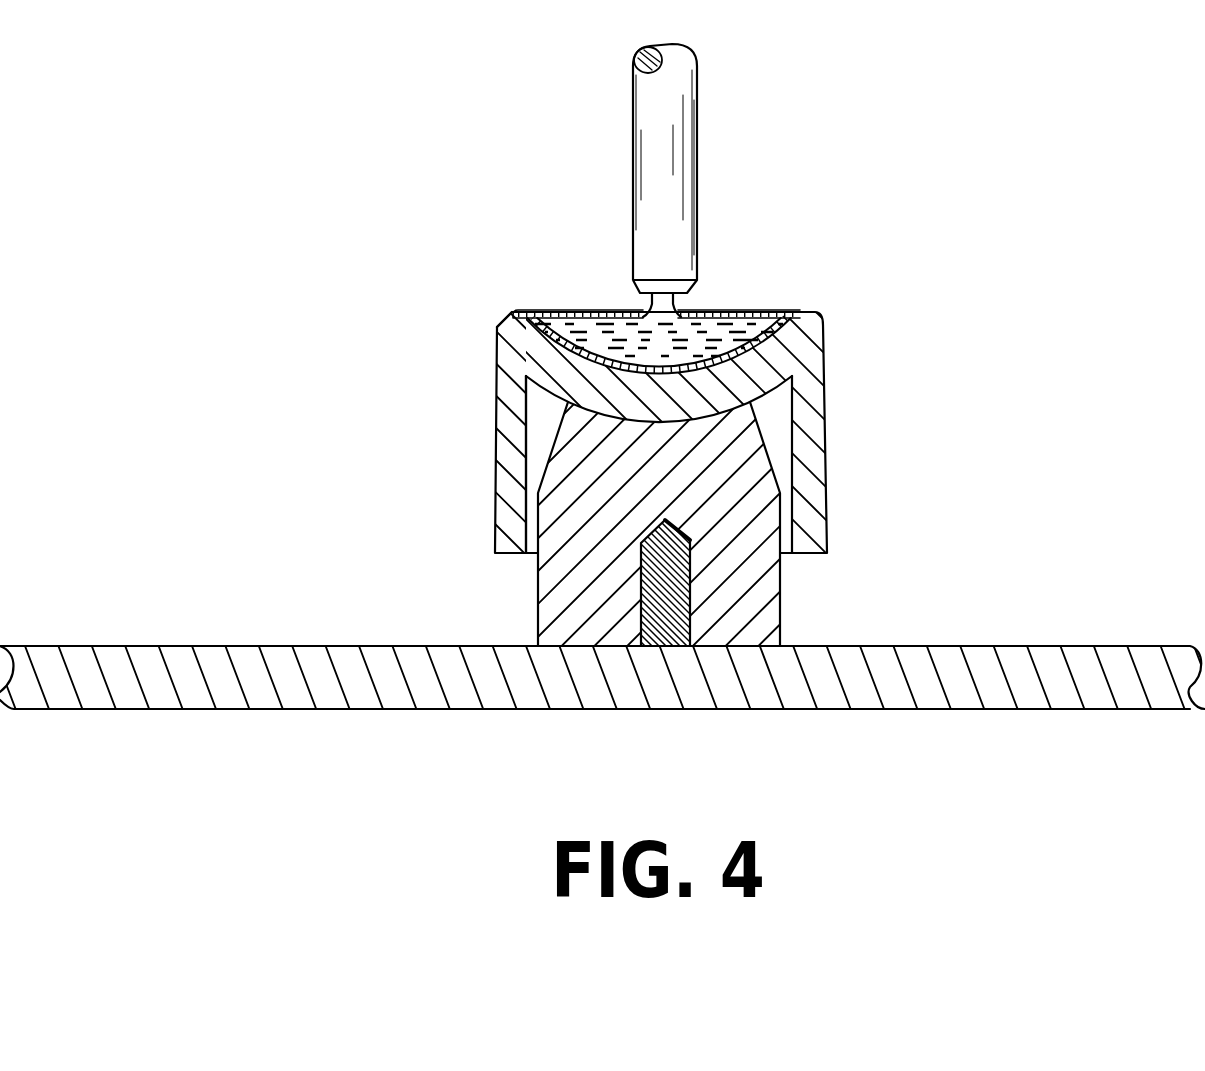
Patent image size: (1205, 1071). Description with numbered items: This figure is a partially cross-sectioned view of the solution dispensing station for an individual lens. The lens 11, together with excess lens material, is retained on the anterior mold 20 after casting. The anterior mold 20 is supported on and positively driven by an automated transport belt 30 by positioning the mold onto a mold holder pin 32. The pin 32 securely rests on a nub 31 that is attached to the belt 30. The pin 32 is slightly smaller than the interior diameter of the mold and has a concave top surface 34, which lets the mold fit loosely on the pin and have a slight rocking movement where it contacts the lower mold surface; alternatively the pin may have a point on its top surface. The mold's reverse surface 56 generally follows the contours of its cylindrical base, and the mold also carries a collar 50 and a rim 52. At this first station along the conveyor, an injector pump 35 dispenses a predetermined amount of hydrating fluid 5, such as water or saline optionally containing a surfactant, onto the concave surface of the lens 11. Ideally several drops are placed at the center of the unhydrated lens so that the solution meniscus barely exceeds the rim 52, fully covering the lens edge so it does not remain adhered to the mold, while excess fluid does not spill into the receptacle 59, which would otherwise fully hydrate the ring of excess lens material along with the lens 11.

The hydrating fluid 5 is at (662, 308).
The lens 11 is at (737, 350).
The anterior mold section 20 is at (827, 408).
The automated transport belt 30 is at (963, 645).
The nub 31 is at (640, 618).
The mold holder pin 32 is at (538, 594).
The top surface 34 is at (700, 418).
The injector pump 35 is at (697, 138).
The collar 50 is at (511, 312).
The rim 52 is at (780, 317).
The reverse surface 56 is at (525, 473).
The receptacle 59 is at (500, 326).